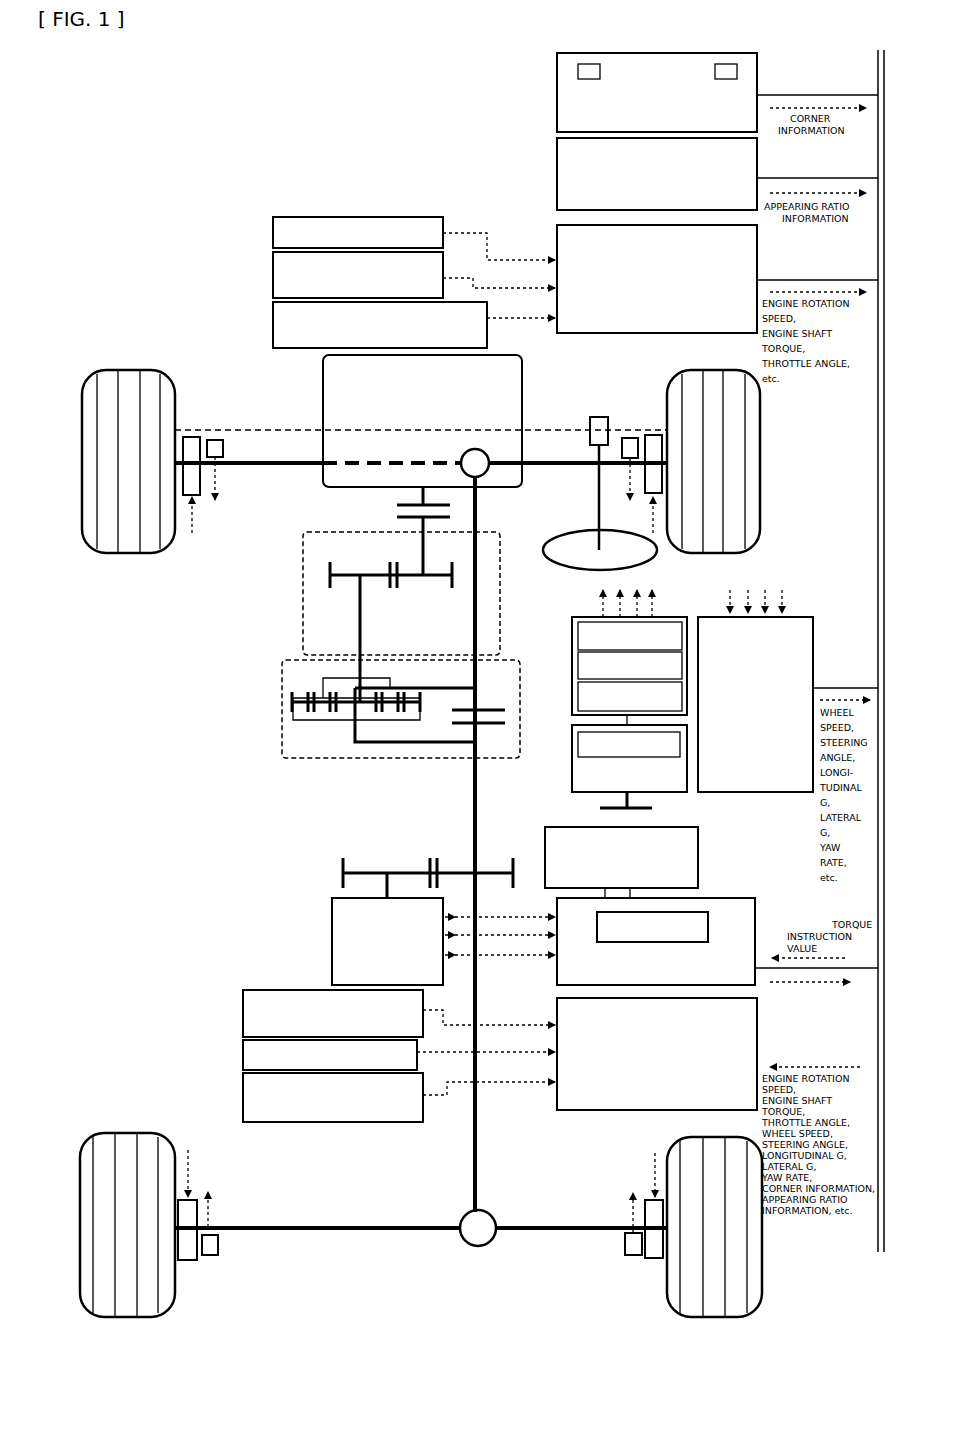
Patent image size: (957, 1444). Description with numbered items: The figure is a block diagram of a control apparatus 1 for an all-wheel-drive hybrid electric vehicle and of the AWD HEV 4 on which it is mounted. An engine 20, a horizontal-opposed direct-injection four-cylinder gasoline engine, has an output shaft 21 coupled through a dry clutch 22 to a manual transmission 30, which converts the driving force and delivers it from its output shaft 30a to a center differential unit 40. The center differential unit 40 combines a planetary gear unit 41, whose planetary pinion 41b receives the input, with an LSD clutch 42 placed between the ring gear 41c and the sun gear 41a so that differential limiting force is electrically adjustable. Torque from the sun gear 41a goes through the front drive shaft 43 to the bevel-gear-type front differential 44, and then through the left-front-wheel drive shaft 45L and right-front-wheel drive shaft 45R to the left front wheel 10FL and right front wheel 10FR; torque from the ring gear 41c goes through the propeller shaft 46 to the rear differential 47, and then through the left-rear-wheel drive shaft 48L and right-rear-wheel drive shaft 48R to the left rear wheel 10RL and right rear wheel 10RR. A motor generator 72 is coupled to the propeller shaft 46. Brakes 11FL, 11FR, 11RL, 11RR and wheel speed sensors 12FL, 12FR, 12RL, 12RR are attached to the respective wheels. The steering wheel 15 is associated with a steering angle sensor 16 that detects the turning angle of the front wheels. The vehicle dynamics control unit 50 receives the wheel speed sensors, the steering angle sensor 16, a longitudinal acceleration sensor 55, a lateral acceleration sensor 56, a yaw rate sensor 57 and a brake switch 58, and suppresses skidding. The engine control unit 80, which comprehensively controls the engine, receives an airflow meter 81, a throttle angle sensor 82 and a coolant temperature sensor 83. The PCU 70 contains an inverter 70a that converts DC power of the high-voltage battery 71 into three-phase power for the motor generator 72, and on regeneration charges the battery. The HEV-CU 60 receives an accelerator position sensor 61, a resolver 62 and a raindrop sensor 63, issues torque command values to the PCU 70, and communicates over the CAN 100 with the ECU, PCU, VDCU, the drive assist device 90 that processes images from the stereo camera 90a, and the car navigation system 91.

The control apparatus 1 is at (792, 530).
The all-wheel-drive hybrid electric vehicle 4 is at (169, 290).
The left front wheel 10FL is at (132, 369).
The right front wheel 10FR is at (760, 425).
The left rear wheel 10RL is at (130, 1132).
The right rear wheel 10RR is at (762, 1268).
The brake 11FL is at (191, 432).
The brake 11FR is at (653, 432).
The brake 11RL is at (188, 1262).
The brake 11RR is at (655, 1260).
The wheel speed sensor 12FL is at (216, 438).
The wheel speed sensor 12FR is at (630, 436).
The wheel speed sensor 12RL is at (208, 1257).
The wheel speed sensor 12RR is at (633, 1257).
The steering wheel 15 is at (586, 530).
The steering angle sensor 16 is at (597, 416).
The engine 20 is at (316, 386).
The output shaft 21 is at (420, 494).
The dry clutch 22 is at (390, 513).
The manual transmission 30 is at (302, 574).
The output shaft 30a is at (362, 645).
The center differential unit 40 is at (276, 691).
The planetary gear unit 41 is at (370, 728).
The sun gear 41a is at (345, 705).
The planetary pinion 41b is at (320, 715).
The ring gear 41c is at (290, 714).
The LSD clutch 42 is at (462, 740).
The front drive shaft 43 is at (478, 507).
The front differential 44 is at (468, 444).
The left-front-wheel drive shaft 45L is at (287, 454).
The right-front-wheel drive shaft 45R is at (556, 454).
The propeller shaft 46 is at (473, 1145).
The rear differential 47 is at (464, 1212).
The left-rear-wheel drive shaft 48L is at (337, 1224).
The right-rear-wheel drive shaft 48R is at (560, 1224).
The vehicle dynamics control unit 50 is at (813, 617).
The longitudinal acceleration sensor 55 is at (687, 642).
The lateral acceleration sensor 56 is at (687, 670).
The yaw rate sensor 57 is at (687, 698).
The brake switch 58 is at (687, 742).
The HEV-CU 60 is at (757, 1030).
The accelerator position sensor 61 is at (243, 1014).
The resolver 62 is at (243, 1055).
The raindrop sensor 63 is at (243, 1097).
The PCU 70 is at (755, 904).
The inverter 70a is at (708, 927).
The high-voltage battery 71 is at (698, 858).
The motor generator 72 is at (332, 944).
The engine control unit 80 is at (757, 250).
The airflow meter 81 is at (273, 233).
The throttle angle sensor 82 is at (273, 275).
The coolant temperature sensor 83 is at (273, 318).
The drive assist device 90 is at (757, 62).
The stereo camera 90a is at (714, 70).
The car navigation system 91 is at (757, 157).
The CAN 100 is at (862, 1212).